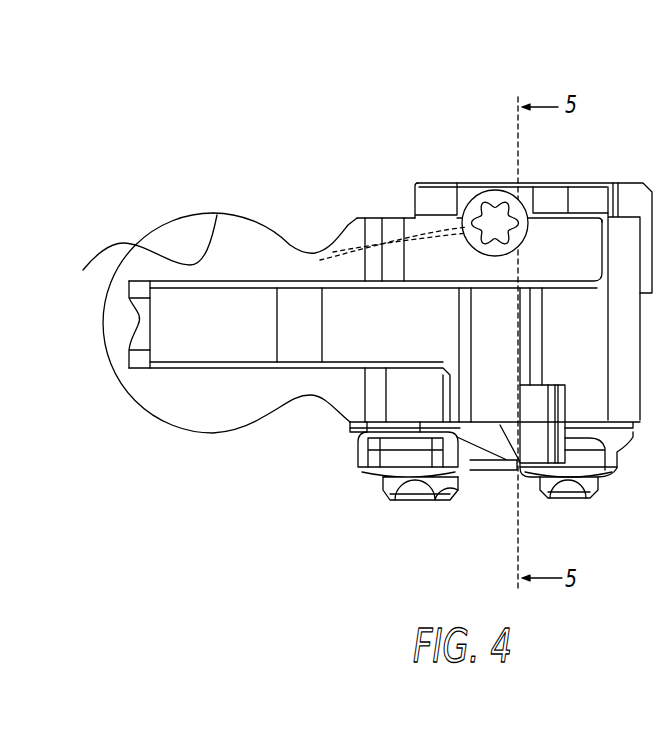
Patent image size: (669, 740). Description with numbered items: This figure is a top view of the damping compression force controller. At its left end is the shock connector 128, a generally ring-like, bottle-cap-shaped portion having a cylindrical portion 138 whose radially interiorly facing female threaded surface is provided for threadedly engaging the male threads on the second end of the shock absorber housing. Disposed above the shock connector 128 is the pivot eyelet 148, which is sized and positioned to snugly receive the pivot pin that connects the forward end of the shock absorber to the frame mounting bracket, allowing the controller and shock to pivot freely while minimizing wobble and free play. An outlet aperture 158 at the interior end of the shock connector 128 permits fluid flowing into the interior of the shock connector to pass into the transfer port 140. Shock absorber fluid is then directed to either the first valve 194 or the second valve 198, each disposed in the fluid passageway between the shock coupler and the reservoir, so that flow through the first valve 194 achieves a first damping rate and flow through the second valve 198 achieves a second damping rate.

The shock connector 128 is at (170, 222).
The cylindrical portion 138 is at (132, 258).
The transfer port 140 is at (360, 240).
The pivot eyelet 148 is at (182, 370).
The outlet aperture 158 is at (330, 250).
The first valve 194 is at (410, 500).
The second valve 198 is at (580, 503).